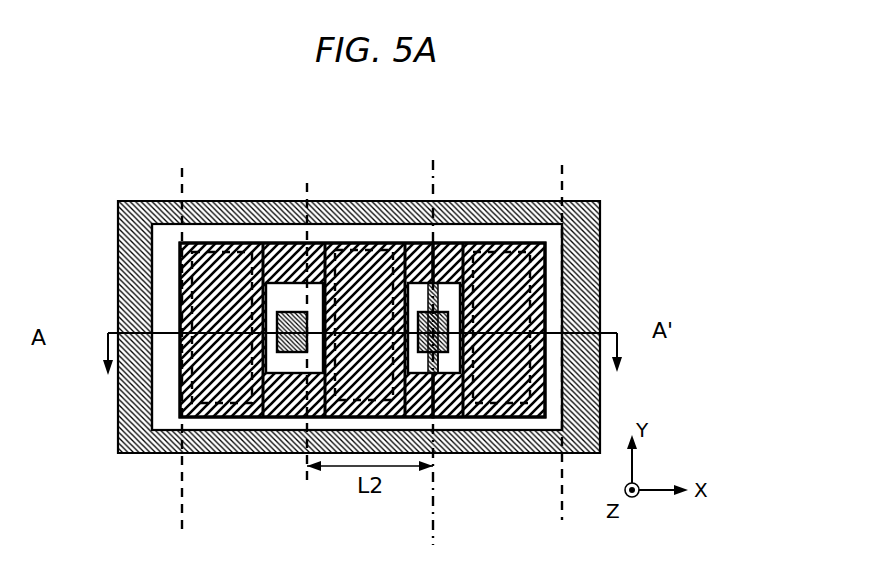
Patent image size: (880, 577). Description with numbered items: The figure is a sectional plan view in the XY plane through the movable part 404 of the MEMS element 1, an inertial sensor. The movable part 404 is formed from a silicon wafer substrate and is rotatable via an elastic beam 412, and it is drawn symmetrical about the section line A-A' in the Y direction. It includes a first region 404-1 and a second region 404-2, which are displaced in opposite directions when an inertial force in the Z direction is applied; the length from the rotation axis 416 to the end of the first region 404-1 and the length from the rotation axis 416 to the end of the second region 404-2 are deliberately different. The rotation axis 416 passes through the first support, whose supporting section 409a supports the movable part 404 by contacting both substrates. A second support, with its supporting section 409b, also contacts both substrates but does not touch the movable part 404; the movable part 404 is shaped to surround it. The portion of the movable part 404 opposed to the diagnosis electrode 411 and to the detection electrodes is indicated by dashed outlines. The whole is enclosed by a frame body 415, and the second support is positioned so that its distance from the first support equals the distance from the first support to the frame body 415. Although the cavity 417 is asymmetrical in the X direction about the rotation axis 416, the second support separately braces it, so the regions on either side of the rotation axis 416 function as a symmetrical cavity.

The MEMS element 1 is at (381, 295).
The movable part 404 is at (437, 317).
The first region 404-1 is at (433, 517).
The second region 404-2 is at (562, 517).
The supporting section 409a is at (448, 312).
The supporting section 409b is at (297, 312).
The diagnosis electrode 411 is at (247, 243).
The elastic beam 412 is at (445, 362).
The frame body 415 is at (573, 292).
The rotation axis 416 is at (433, 160).
The cavity 417 is at (165, 417).